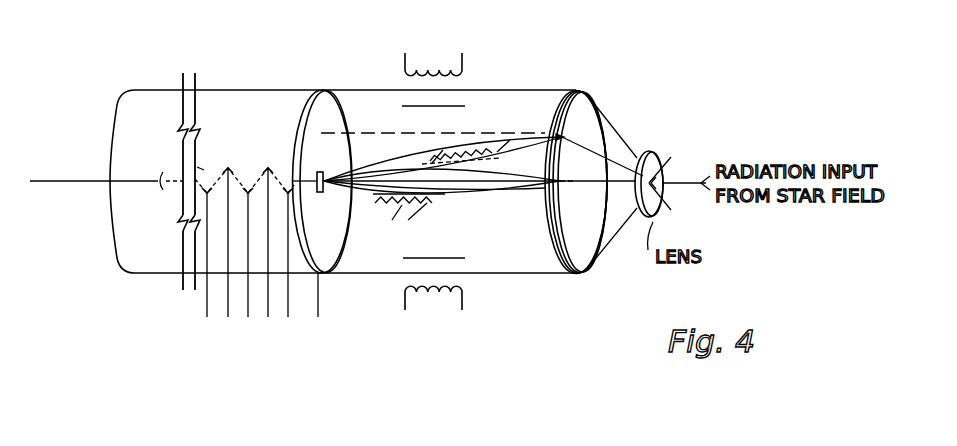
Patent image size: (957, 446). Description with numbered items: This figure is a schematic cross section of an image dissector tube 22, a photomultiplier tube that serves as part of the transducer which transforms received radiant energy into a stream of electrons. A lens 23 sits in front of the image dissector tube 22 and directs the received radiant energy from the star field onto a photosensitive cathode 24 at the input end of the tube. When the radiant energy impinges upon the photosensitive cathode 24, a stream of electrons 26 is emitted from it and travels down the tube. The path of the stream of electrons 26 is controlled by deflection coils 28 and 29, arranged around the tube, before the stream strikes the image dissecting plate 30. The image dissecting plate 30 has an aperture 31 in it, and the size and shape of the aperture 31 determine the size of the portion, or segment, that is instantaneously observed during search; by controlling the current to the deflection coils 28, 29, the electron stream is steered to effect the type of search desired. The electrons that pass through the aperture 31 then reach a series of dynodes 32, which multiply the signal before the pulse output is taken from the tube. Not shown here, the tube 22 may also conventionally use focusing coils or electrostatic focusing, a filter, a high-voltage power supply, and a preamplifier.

The image dissector tube 22 is at (257, 88).
The lens 23 is at (648, 148).
The photosensitive cathode 24 is at (590, 88).
The stream of electrons 26 is at (519, 189).
The deflection coil 28 is at (424, 55).
The deflection coil 29 is at (488, 131).
The image dissecting plate 30 is at (343, 88).
The aperture 31 is at (313, 173).
The dynodes 32 is at (272, 165).